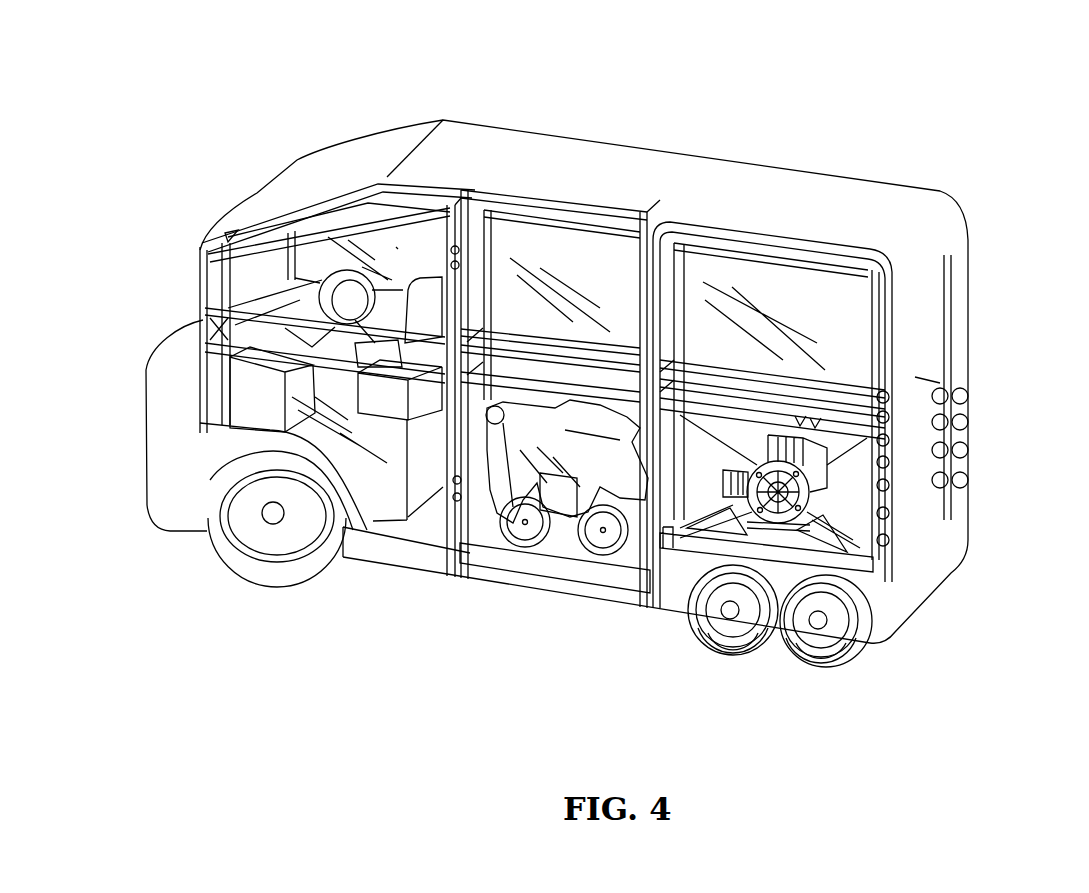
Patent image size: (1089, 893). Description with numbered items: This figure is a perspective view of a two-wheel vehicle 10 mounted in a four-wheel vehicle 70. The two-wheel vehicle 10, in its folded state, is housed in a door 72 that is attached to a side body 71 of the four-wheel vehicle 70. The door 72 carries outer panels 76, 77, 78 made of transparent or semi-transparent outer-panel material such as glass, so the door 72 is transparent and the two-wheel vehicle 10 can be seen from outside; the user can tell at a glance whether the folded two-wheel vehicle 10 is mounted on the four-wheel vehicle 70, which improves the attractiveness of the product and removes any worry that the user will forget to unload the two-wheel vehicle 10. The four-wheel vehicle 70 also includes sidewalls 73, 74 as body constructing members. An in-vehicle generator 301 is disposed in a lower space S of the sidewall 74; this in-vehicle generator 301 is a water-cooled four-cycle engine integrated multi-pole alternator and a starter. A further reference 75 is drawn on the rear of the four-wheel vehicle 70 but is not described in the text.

The four-wheel vehicle 70 is at (158, 135).
The side body 71 is at (395, 583).
The door 72 is at (527, 577).
The sidewall 73 is at (430, 556).
The sidewall 74 is at (673, 598).
The rear lamp panel 75 is at (956, 375).
The outer panel 76 is at (583, 212).
The outer panel 77 is at (406, 183).
The outer panel 78 is at (798, 243).
The two-wheel vehicle 10 is at (568, 554).
The in-vehicle generator 301 is at (823, 477).
The lower space S is at (845, 493).